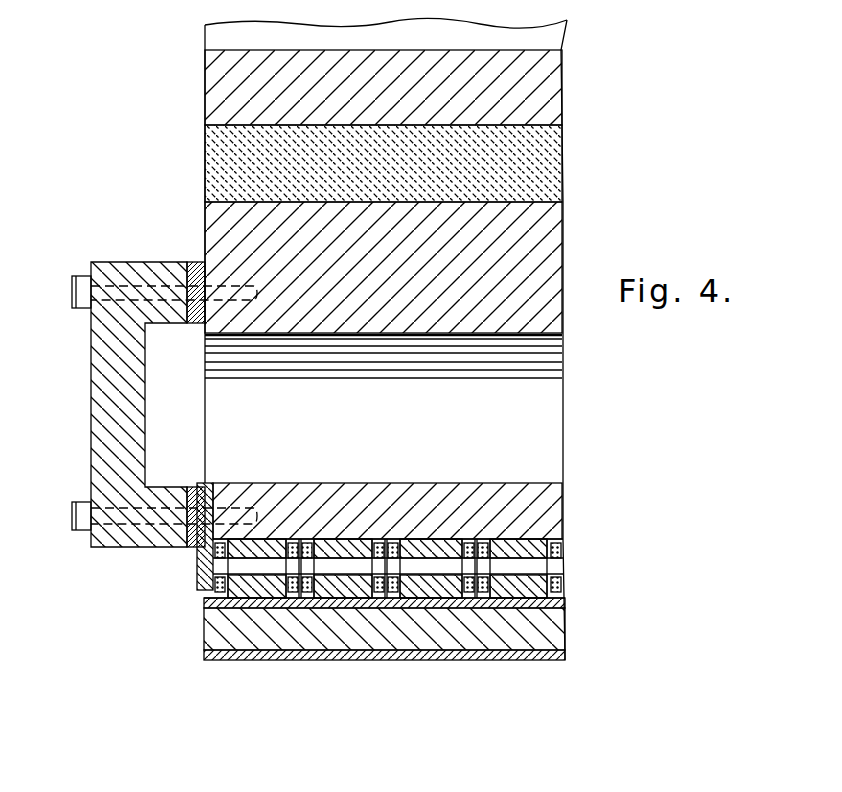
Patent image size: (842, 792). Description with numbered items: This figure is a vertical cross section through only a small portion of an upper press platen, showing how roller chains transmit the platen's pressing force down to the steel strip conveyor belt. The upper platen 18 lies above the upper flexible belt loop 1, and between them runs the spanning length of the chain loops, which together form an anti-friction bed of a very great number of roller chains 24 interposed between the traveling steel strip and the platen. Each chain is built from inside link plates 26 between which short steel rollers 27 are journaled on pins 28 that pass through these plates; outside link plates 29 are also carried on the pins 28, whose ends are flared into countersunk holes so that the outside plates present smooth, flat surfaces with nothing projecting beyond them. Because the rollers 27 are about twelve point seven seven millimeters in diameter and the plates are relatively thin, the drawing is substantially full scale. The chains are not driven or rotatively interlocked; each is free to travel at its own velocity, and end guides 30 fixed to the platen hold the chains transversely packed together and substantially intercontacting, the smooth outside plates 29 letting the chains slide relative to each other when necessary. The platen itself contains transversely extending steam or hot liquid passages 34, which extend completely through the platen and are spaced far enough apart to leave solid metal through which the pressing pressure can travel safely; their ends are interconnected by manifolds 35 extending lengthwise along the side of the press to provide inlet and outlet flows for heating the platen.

The upper flexible belt loop 1 is at (562, 603).
The upper platen 18 is at (184, 255).
The roller chains 24 is at (412, 590).
The inside link plates 26 is at (547, 607).
The steel rollers 27 is at (228, 606).
The pins 28 is at (422, 570).
The outside link plates 29 is at (312, 598).
The end guides 30 is at (197, 574).
The steam or hot liquid passages 34 is at (550, 405).
The manifolds 35 is at (100, 404).